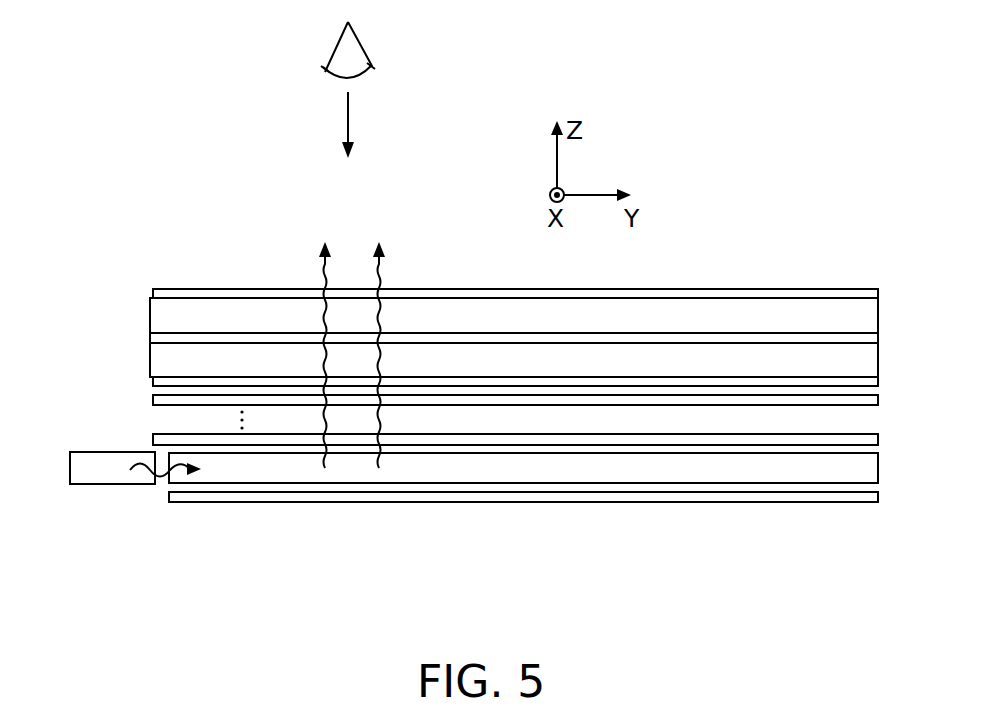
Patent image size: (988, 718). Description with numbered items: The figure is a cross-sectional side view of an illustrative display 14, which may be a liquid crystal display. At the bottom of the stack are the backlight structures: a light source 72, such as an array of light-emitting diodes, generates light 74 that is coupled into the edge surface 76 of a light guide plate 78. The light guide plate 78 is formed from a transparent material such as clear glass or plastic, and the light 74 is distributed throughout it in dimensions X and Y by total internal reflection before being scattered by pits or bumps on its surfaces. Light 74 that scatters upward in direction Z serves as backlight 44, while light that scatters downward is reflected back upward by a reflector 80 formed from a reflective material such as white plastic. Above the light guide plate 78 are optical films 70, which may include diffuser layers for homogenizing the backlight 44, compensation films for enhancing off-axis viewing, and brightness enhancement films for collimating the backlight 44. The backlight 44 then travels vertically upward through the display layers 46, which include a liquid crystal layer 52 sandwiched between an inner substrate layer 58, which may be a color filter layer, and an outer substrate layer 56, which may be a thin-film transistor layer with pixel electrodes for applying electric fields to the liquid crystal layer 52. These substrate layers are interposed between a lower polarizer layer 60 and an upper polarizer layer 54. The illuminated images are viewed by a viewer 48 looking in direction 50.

The display 14 is at (818, 132).
The backlight 44 is at (376, 268).
The display layers 46 is at (469, 328).
The viewer 48 is at (358, 50).
The direction 50 is at (348, 127).
The liquid crystal layer 52 is at (207, 340).
The upper polarizer layer 54 is at (168, 293).
The outer substrate layer 56 is at (150, 312).
The inner substrate layer 58 is at (150, 362).
The lower polarizer layer 60 is at (479, 399).
The optical films 70 is at (162, 438).
The light source 72 is at (78, 477).
The light 74 is at (143, 472).
The edge surface 76 is at (167, 476).
The light guide plate 78 is at (510, 506).
The reflector 80 is at (285, 497).